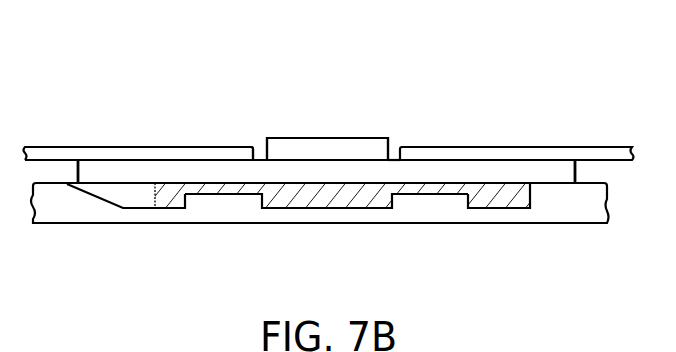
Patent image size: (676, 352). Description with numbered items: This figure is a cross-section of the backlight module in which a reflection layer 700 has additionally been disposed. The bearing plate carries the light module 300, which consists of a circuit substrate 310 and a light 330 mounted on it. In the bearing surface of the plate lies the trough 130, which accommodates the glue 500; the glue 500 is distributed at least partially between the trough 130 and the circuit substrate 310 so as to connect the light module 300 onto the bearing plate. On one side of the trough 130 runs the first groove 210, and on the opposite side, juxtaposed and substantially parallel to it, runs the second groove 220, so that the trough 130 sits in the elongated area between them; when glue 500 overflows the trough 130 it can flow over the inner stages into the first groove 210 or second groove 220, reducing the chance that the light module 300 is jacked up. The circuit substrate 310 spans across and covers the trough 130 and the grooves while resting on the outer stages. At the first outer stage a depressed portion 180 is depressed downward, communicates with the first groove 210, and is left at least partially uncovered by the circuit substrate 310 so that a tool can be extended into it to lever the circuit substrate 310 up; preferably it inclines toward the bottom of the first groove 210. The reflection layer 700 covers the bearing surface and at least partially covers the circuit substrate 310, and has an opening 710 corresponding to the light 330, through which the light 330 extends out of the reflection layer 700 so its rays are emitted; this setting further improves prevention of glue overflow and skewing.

The trough 130 is at (351, 202).
The depressed portion 180 is at (105, 198).
The first groove 210 is at (140, 200).
The second groove 220 is at (517, 200).
The glue 500 is at (296, 200).
The reflection layer 700 is at (510, 148).
The opening 710 is at (395, 146).
The light module 300 is at (224, 93).
The circuit substrate 310 is at (238, 170).
The light 330 is at (303, 145).